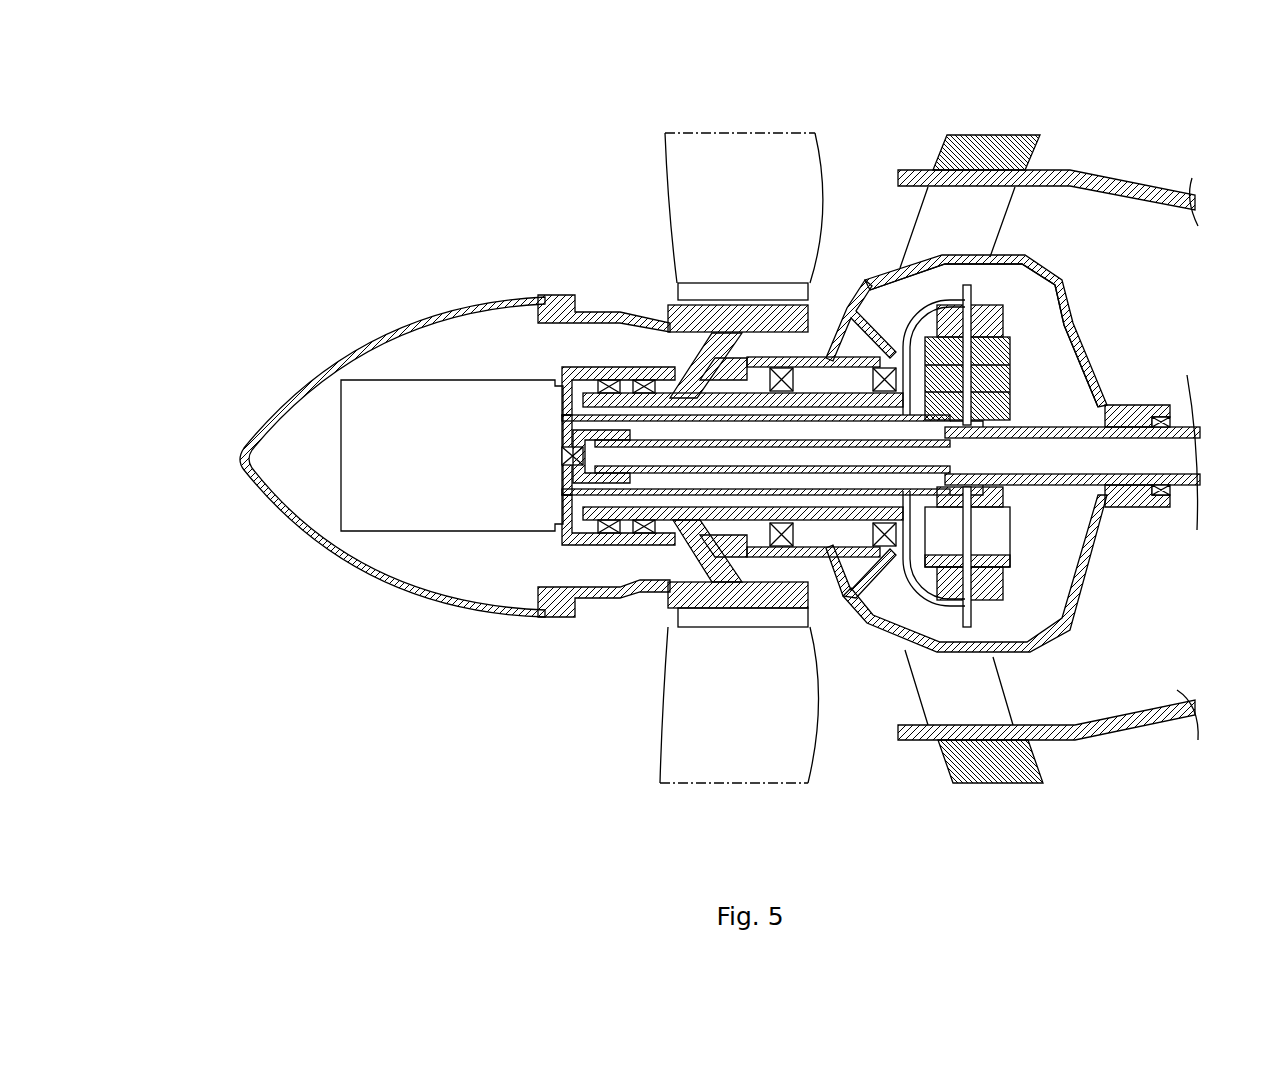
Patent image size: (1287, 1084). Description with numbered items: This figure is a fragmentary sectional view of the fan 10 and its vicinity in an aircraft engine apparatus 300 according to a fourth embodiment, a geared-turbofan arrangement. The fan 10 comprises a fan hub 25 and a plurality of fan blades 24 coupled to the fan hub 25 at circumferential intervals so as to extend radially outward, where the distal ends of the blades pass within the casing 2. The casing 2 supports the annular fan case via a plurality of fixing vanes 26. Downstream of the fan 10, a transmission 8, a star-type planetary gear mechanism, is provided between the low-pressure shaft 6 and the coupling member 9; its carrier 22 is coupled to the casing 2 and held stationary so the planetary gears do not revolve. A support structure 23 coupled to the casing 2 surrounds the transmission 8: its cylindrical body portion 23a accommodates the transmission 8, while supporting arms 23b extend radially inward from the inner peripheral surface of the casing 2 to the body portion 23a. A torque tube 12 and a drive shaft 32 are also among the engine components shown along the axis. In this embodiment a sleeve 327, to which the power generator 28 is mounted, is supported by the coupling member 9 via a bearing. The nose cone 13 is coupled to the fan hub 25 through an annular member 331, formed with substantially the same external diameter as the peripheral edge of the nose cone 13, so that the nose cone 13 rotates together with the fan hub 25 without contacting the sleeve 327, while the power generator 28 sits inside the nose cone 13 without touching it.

The engine apparatus 300 is at (258, 316).
The nose cone 13 is at (276, 396).
The power generator 28 is at (402, 374).
The annular member 331 is at (590, 313).
The fan 10 is at (661, 197).
The fan hub 25 is at (692, 358).
The torque tube 12 is at (577, 500).
The sleeve 327 is at (583, 365).
The drive shaft 32 is at (840, 477).
The low-pressure shaft 6 is at (1052, 425).
The transmission 8 is at (1002, 292).
The carrier 22 is at (1020, 543).
The support structure 23 is at (1041, 463).
The body portion 23a is at (1037, 647).
The supporting arms 23b is at (1007, 688).
The fan blades 24 is at (828, 188).
The casing 2 is at (1082, 172).
The fixing vanes 26 is at (1028, 732).
The coupling member 9 is at (867, 560).